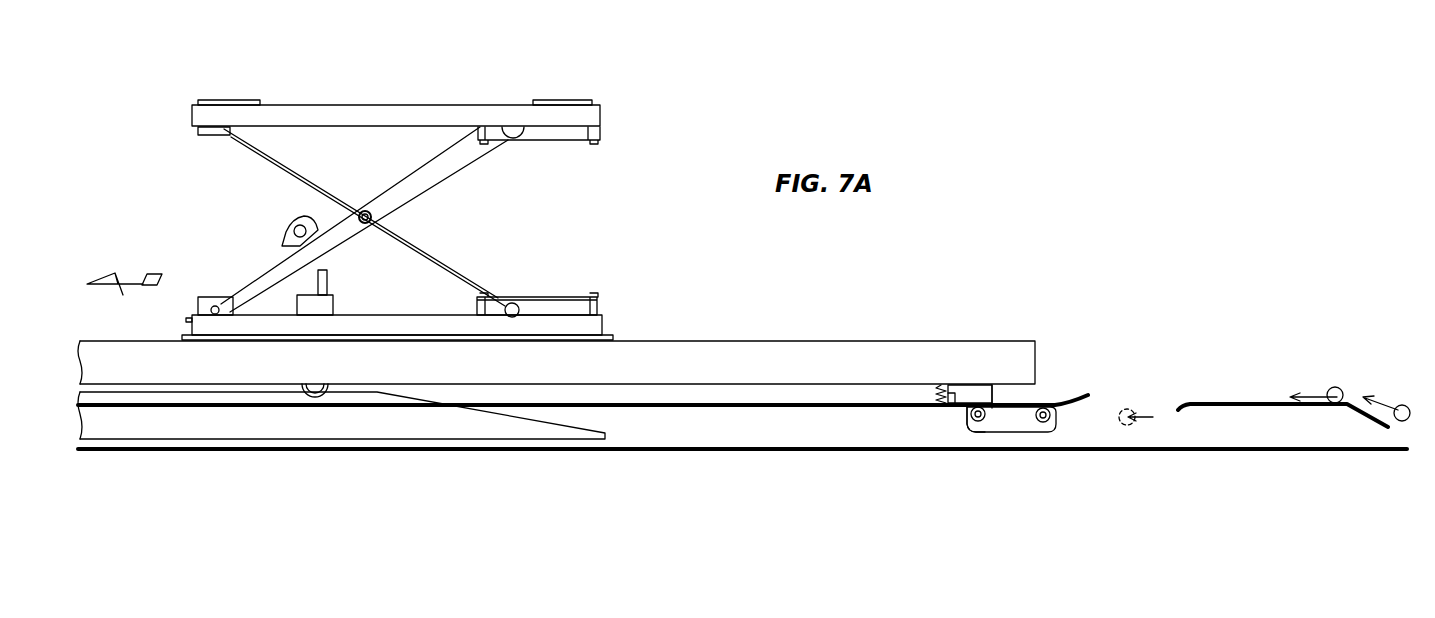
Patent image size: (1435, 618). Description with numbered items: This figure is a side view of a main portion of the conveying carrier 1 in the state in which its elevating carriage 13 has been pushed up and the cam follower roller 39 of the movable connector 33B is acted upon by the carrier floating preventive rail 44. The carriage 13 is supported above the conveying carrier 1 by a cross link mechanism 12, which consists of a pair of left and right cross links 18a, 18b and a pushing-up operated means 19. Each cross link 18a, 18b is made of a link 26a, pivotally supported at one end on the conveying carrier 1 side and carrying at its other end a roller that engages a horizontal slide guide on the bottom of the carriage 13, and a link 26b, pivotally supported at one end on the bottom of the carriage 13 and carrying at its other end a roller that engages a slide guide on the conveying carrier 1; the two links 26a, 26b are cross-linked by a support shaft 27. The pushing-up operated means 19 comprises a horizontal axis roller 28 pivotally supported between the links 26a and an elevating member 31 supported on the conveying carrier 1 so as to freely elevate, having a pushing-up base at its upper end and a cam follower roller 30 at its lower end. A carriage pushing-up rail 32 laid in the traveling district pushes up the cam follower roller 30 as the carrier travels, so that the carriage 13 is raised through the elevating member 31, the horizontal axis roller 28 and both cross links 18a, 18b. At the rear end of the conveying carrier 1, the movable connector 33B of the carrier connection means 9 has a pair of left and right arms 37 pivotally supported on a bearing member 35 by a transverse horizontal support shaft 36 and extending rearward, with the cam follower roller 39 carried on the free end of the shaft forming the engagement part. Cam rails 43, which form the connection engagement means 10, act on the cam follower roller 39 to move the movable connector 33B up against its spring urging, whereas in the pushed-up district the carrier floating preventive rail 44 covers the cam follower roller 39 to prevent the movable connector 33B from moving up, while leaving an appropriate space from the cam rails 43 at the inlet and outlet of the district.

The conveying carrier 1 is at (714, 340).
The carrier connection means 9 is at (991, 476).
The movable connector 33B is at (991, 455).
The connection engagement means 10 is at (1247, 400).
The cross link mechanism 12 is at (360, 176).
The carriage 13 is at (410, 103).
The cross link 18a is at (364, 173).
The cross link 18b is at (306, 155).
The pushing-up operated means 19 is at (333, 283).
The link 26a is at (455, 160).
The link 26b is at (465, 270).
The support shaft 27 is at (365, 211).
The horizontal axis roller 28 is at (282, 218).
The cam follower roller 30 is at (315, 392).
The elevating member 31 is at (297, 285).
The carriage pushing-up rail 32 is at (243, 420).
The bearing member 35 is at (965, 392).
The support shaft 36 is at (956, 455).
The arm 37 is at (1016, 414).
The cam follower roller 39 is at (1058, 420).
The cam rail 43 is at (1275, 408).
The carrier floating preventive rail 44 is at (808, 403).